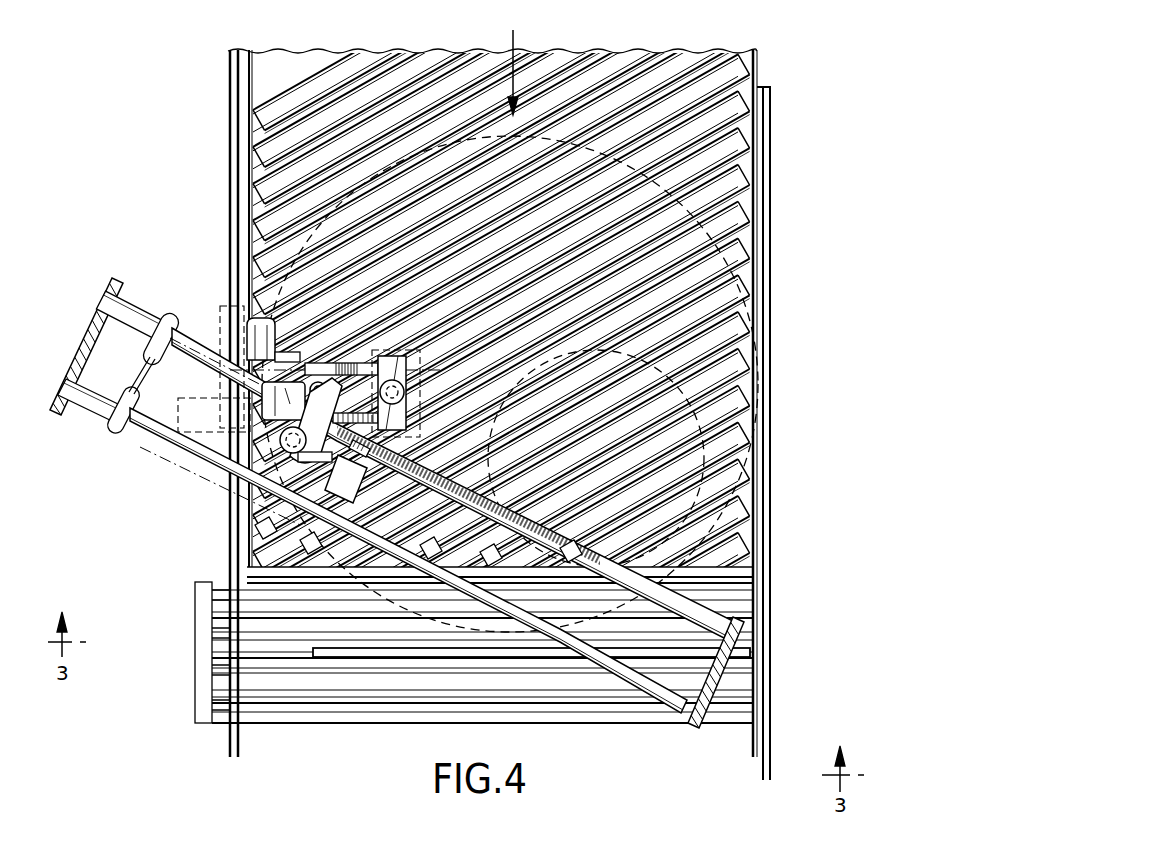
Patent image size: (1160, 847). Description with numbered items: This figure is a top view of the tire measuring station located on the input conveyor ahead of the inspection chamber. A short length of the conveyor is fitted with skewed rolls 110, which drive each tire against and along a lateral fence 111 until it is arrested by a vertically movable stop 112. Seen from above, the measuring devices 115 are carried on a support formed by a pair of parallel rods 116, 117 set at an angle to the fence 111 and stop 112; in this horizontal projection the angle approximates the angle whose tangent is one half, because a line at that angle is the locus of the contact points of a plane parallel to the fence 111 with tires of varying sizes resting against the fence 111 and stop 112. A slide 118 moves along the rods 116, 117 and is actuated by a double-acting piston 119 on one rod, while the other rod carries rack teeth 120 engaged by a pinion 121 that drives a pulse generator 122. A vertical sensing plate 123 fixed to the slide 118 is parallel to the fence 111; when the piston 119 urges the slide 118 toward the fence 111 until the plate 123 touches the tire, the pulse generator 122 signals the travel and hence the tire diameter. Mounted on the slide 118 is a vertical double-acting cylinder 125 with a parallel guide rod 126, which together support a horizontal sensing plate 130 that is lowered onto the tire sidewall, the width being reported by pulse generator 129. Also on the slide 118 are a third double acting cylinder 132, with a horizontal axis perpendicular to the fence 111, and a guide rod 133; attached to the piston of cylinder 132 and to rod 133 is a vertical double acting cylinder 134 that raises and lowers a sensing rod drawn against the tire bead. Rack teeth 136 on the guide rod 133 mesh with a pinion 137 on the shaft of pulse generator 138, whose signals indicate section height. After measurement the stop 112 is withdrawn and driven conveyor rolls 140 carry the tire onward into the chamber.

The skewed rolls 110 is at (730, 193).
The lateral fence 111 is at (765, 256).
The vertically movable stop 112 is at (353, 660).
The measuring devices 115 is at (193, 471).
The rod 116 is at (752, 568).
The rod 117 is at (664, 690).
The slide 118 is at (165, 384).
The double-acting piston 119 is at (135, 425).
The rack teeth 120 is at (605, 498).
The pinion 121 is at (415, 402).
The pulse generator 122 is at (335, 478).
The vertical sensing plate 123 is at (275, 457).
The vertical double-acting cylinder 125 is at (285, 452).
The guide rod 126 is at (305, 393).
The pulse generator 129 is at (300, 380).
The horizontal sensing plate 130 is at (253, 531).
The double acting cylinder 132 is at (185, 446).
The guide rod 133 is at (392, 372).
The vertical double acting cylinder 134 is at (406, 378).
The rack teeth 136 is at (343, 368).
The pinion 137 is at (262, 337).
The pulse generator 138 is at (262, 320).
The driven conveyor rolls 140 is at (556, 705).